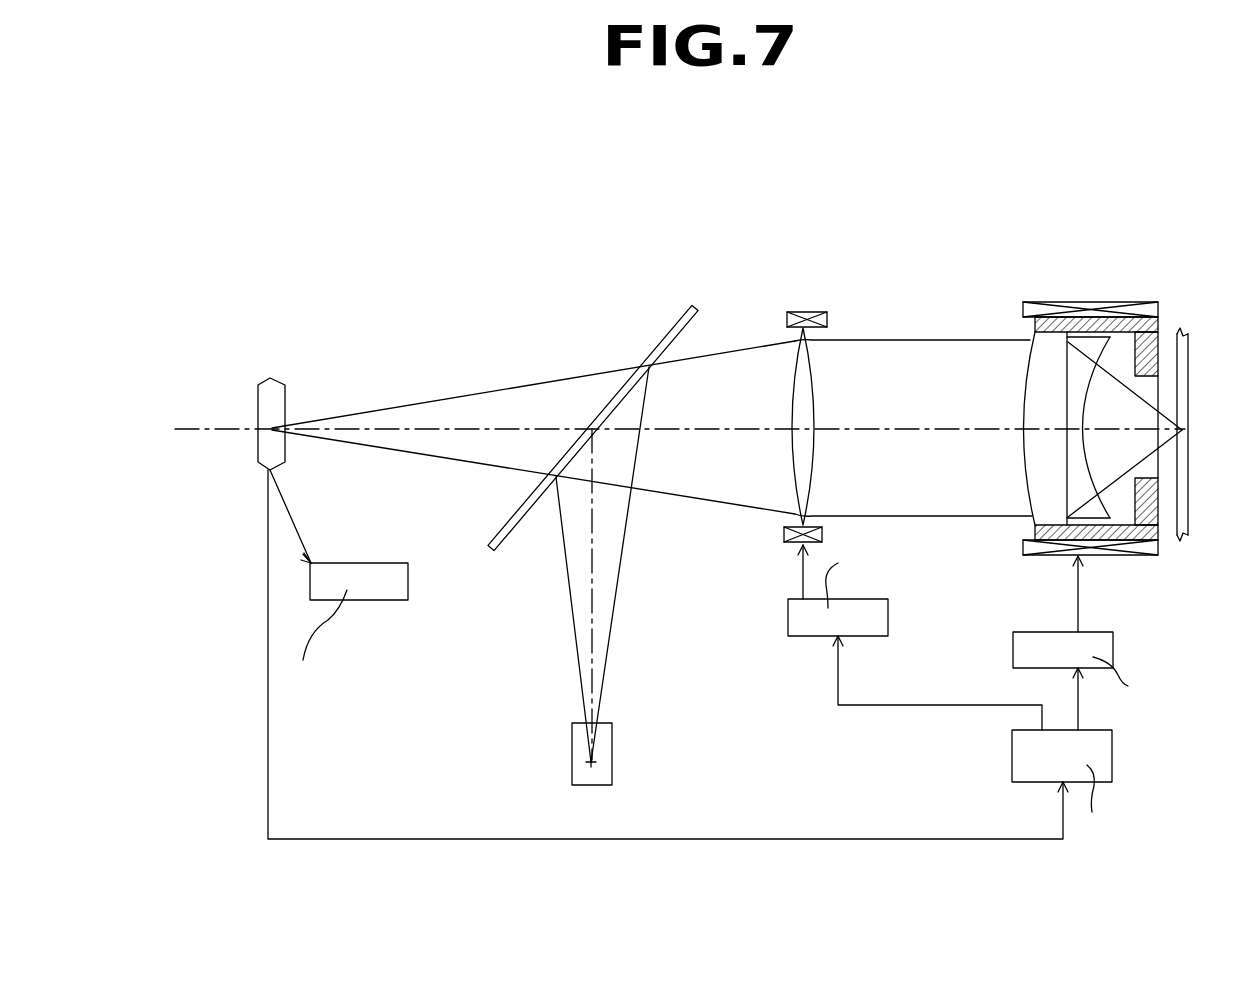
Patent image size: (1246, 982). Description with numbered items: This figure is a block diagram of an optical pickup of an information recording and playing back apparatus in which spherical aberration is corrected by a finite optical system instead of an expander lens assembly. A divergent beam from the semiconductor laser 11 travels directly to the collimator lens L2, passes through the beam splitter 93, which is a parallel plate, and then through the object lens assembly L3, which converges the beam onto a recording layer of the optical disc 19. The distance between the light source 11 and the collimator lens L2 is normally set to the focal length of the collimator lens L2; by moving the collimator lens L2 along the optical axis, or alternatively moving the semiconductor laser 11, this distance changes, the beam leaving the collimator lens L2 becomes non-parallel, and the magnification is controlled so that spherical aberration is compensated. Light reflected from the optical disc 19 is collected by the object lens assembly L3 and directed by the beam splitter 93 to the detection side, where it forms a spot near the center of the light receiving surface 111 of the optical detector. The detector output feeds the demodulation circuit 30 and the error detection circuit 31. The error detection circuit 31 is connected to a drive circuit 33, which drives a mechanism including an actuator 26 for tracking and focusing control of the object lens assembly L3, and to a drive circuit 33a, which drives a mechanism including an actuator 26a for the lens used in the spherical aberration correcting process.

The light receiving surface 111 is at (270, 398).
The beam splitter 93 is at (694, 306).
The semiconductor laser 11 is at (572, 725).
The demodulation circuit 30 is at (388, 600).
The collimator lens L2 is at (815, 342).
The actuator 26a is at (785, 548).
The drive circuit 33a is at (790, 636).
The object lens assembly L3 is at (1006, 326).
The actuator 26 is at (1034, 556).
The optical disc 19 is at (1190, 333).
The drive circuit 33 is at (1110, 652).
The error detection circuit 31 is at (1113, 742).